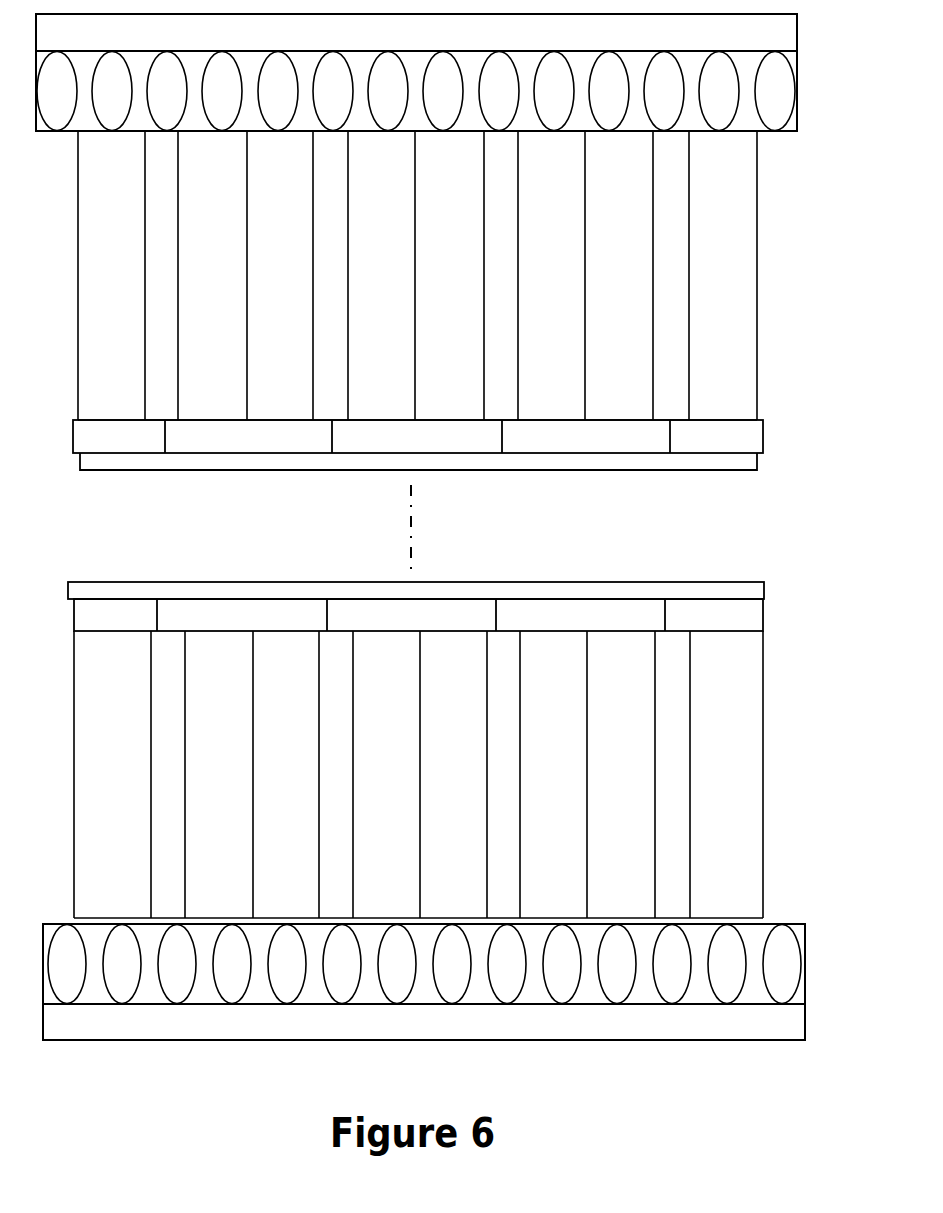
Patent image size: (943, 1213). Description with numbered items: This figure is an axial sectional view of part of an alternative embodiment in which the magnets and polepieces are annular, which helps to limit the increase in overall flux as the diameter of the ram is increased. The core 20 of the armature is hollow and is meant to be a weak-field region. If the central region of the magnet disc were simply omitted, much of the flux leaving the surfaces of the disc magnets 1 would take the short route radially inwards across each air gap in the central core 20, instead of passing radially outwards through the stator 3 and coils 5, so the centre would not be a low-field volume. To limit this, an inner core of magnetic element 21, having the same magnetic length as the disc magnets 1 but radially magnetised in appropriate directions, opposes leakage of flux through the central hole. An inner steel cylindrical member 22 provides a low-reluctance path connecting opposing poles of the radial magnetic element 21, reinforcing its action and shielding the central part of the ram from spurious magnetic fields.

The disc magnets 1 is at (160, 405).
The stator 3 is at (78, 1025).
The coils 5 is at (285, 977).
The core 20 is at (424, 792).
The magnetic element 21 is at (203, 621).
The inner steel cylindrical member 22 is at (375, 615).